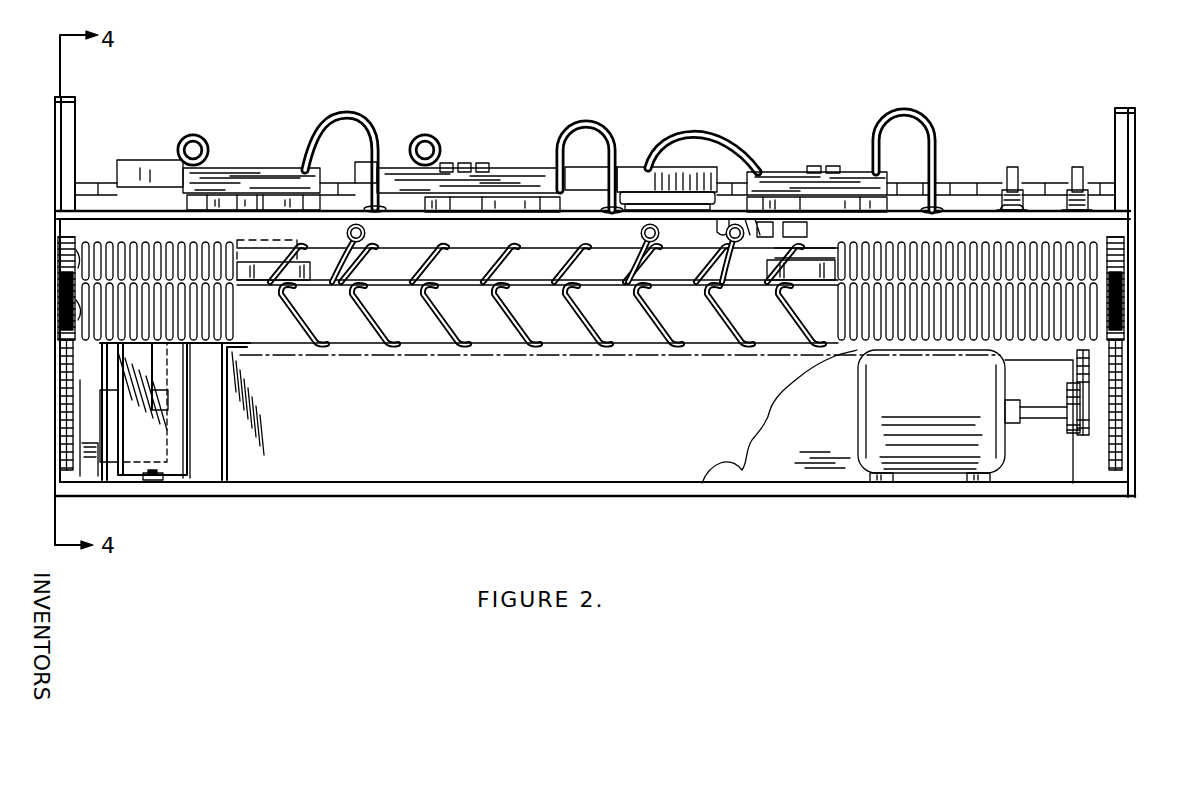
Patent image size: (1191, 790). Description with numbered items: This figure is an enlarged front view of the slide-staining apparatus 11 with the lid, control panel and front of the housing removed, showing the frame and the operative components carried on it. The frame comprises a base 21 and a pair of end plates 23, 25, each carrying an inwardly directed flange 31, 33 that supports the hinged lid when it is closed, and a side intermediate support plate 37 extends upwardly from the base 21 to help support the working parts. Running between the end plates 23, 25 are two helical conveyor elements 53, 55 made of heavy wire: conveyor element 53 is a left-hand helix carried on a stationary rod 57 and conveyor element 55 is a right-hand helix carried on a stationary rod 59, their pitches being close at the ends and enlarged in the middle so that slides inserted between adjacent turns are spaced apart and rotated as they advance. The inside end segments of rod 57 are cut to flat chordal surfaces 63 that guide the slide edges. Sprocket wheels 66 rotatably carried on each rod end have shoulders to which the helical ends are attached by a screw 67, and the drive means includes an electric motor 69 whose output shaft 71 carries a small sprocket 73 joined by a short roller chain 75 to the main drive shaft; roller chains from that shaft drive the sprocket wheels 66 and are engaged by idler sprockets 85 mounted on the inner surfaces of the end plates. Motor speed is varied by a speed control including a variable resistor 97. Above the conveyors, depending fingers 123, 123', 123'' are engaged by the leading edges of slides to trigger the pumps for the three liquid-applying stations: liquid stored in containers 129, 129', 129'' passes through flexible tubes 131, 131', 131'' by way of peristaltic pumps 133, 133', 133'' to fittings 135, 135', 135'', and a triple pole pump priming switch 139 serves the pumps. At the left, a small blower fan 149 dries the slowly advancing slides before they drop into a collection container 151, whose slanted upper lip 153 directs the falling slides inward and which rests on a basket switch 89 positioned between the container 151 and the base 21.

The slide-staining apparatus 11 is at (1068, 86).
The base 21 is at (398, 490).
The end plate 23 is at (1130, 232).
The end plate 25 is at (57, 214).
The inwardly directed flange 31 is at (1127, 108).
The inwardly directed flange 33 is at (70, 97).
The side intermediate support plate 37 is at (228, 372).
The conveyor element 53 is at (512, 251).
The conveyor element 55 is at (587, 313).
The stationary rod 57 is at (595, 262).
The stationary rod 59 is at (763, 330).
The flat chordal surface 63 is at (307, 267).
The sprocket wheel 66 is at (73, 316).
The screw 67 is at (92, 312).
The electric motor 69 is at (945, 470).
The output shaft 71 is at (1040, 419).
The small sprocket 73 is at (1070, 404).
The short roller chain 75 is at (1090, 380).
The idler sprocket 85 is at (60, 452).
The basket switch 89 is at (155, 478).
The variable resistor 97 is at (1010, 167).
The depending finger 123 is at (670, 252).
The finger 123' is at (749, 254).
The finger 123'' is at (382, 247).
The container 129 is at (687, 151).
The liquid container 129' is at (470, 81).
The liquid container 129'' is at (218, 152).
The flexible tube 131 is at (933, 142).
The tube 131' is at (607, 145).
The tube 131'' is at (457, 136).
The peristaltic pump 133 is at (817, 155).
The pump 133' is at (492, 155).
The pump 133'' is at (345, 151).
The fitting 135 is at (962, 171).
The fitting 135' is at (591, 172).
The fitting 135'' is at (348, 200).
The triple pole pump priming switch 139 is at (1073, 167).
The blower fan 149 is at (97, 465).
The collection container 151 is at (113, 432).
The slanted upper lip 153 is at (120, 350).